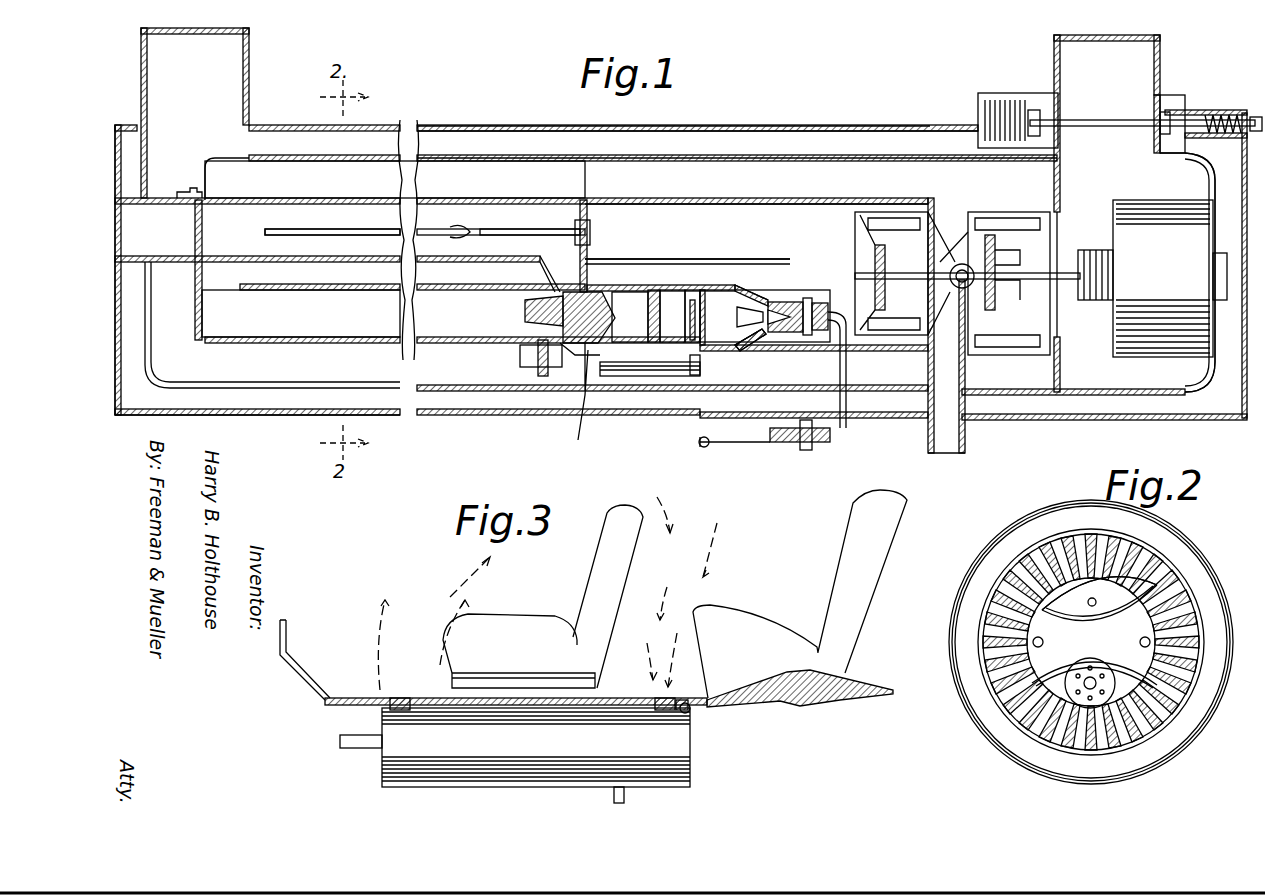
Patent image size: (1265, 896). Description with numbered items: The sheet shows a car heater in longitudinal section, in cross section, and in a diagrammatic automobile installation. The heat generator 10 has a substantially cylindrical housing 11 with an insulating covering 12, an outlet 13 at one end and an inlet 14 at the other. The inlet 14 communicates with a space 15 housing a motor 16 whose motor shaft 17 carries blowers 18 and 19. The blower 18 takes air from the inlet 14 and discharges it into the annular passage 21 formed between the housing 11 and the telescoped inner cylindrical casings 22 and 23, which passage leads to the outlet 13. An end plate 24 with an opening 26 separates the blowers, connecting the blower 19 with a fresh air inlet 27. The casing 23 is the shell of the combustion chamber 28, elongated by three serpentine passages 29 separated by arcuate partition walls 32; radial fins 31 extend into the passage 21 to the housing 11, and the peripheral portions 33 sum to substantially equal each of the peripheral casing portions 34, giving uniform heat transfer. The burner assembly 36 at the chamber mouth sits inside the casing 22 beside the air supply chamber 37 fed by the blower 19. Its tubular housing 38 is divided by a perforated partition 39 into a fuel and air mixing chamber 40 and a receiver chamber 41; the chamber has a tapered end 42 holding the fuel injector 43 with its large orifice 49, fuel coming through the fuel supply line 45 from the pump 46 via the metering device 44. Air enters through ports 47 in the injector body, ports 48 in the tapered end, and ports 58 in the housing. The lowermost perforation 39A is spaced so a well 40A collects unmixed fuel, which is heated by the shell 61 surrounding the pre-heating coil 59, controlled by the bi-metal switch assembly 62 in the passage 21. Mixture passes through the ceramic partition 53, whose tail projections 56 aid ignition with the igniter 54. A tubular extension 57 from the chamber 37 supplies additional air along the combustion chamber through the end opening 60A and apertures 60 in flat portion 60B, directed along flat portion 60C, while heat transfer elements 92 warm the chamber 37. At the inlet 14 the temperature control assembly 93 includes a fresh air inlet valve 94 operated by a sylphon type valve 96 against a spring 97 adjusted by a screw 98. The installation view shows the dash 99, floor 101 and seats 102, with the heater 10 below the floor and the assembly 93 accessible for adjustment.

In FIG. 1, the heat generator 10 is at (812, 130).
In FIG. 3, the heat generator 10 is at (515, 747).
In FIG. 1, the housing 11 is at (660, 165).
In FIG. 2, the housing 11 is at (1075, 530).
In FIG. 1, the insulating covering 12 is at (725, 160).
In FIG. 2, the insulating covering 12 is at (1025, 520).
In FIG. 1, the outlet 13 is at (249, 40).
In FIG. 3, the outlet 13 is at (390, 705).
In FIG. 1, the inlet 14 is at (1160, 50).
In FIG. 3, the inlet 14 is at (662, 706).
In FIG. 1, the space 15 is at (1086, 255).
In FIG. 1, the motor 16 is at (1152, 278).
In FIG. 1, the motor shaft 17 is at (1033, 285).
In FIG. 1, the blower 18 is at (1030, 212).
In FIG. 1, the blower 19 is at (891, 273).
In FIG. 1, the passage 21 is at (318, 383).
In FIG. 2, the passage 21 is at (1220, 608).
In FIG. 1, the inner cylindrical casing 22 is at (890, 200).
In FIG. 1, the inner cylindrical casing 23 is at (490, 190).
In FIG. 2, the inner cylindrical casing 23 is at (1180, 690).
In FIG. 1, the end plate 24 is at (945, 210).
In FIG. 1, the opening 26 is at (945, 312).
In FIG. 1, the fresh air inlet 27 is at (965, 440).
In FIG. 3, the fresh air inlet 27 is at (624, 798).
In FIG. 1, the combustion chamber 28 is at (282, 190).
In FIG. 1, the passages 29 is at (500, 258).
In FIG. 1, the fins 31 is at (585, 190).
In FIG. 2, the fins 31 is at (1150, 608).
In FIG. 1, the partition walls 32 is at (248, 275).
In FIG. 2, the partition walls 32 is at (1105, 632).
In FIG. 2, the peripheral portions 33 is at (1098, 648).
In FIG. 2, the peripheral casing portions 34 is at (1195, 752).
In FIG. 1, the burner assembly 36 is at (577, 395).
In FIG. 1, the air supply chamber 37 is at (765, 283).
In FIG. 1, the tubular housing 38 is at (715, 288).
In FIG. 1, the perforated partition 39 is at (652, 290).
In FIG. 1, the lowermost perforation 39A is at (600, 338).
In FIG. 1, the fuel and air mixing chamber 40 is at (680, 280).
In FIG. 1, the well 40A is at (682, 317).
In FIG. 1, the receiver chamber 41 is at (637, 317).
In FIG. 1, the tapered end 42 is at (762, 333).
In FIG. 1, the fuel injector 43 is at (820, 302).
In FIG. 1, the metering device 44 is at (830, 440).
In FIG. 1, the fuel supply line 45 is at (845, 373).
In FIG. 1, the pump 46 is at (730, 448).
In FIG. 1, the ports 47 is at (806, 298).
In FIG. 1, the ports 48 is at (775, 300).
In FIG. 1, the injector orifice 49 is at (740, 322).
In FIG. 1, the ceramic partition 53 is at (565, 292).
In FIG. 2, the ceramic partition 53 is at (1050, 700).
In FIG. 1, the igniter 54 is at (520, 355).
In FIG. 1, the tail projections 56 is at (530, 311).
In FIG. 1, the tubular extension 57 is at (320, 232).
In FIG. 2, the tubular extension 57 is at (1097, 602).
In FIG. 1, the ports 58 is at (600, 290).
In FIG. 1, the coil 59 is at (705, 365).
In FIG. 1, the apertures 60 is at (462, 234).
In FIG. 1, the end opening 60A is at (312, 230).
In FIG. 1, the flat portion 60B is at (500, 230).
In FIG. 1, the flat portion 60C is at (451, 221).
In FIG. 1, the shell 61 is at (740, 290).
In FIG. 1, the bi-metal switch assembly 62 is at (695, 378).
In FIG. 1, the heat transfer elements 92 is at (805, 260).
In FIG. 1, the temperature control assembly 93 is at (1100, 121).
In FIG. 3, the temperature control assembly 93 is at (690, 712).
In FIG. 1, the fresh air inlet valve 94 is at (1185, 100).
In FIG. 1, the sylphon type valve 96 is at (1000, 93).
In FIG. 1, the spring 97 is at (1222, 112).
In FIG. 1, the screw 98 is at (1236, 140).
In FIG. 3, the dash 99 is at (288, 625).
In FIG. 3, the floor 101 is at (820, 698).
In FIG. 3, the seats 102 is at (618, 555).